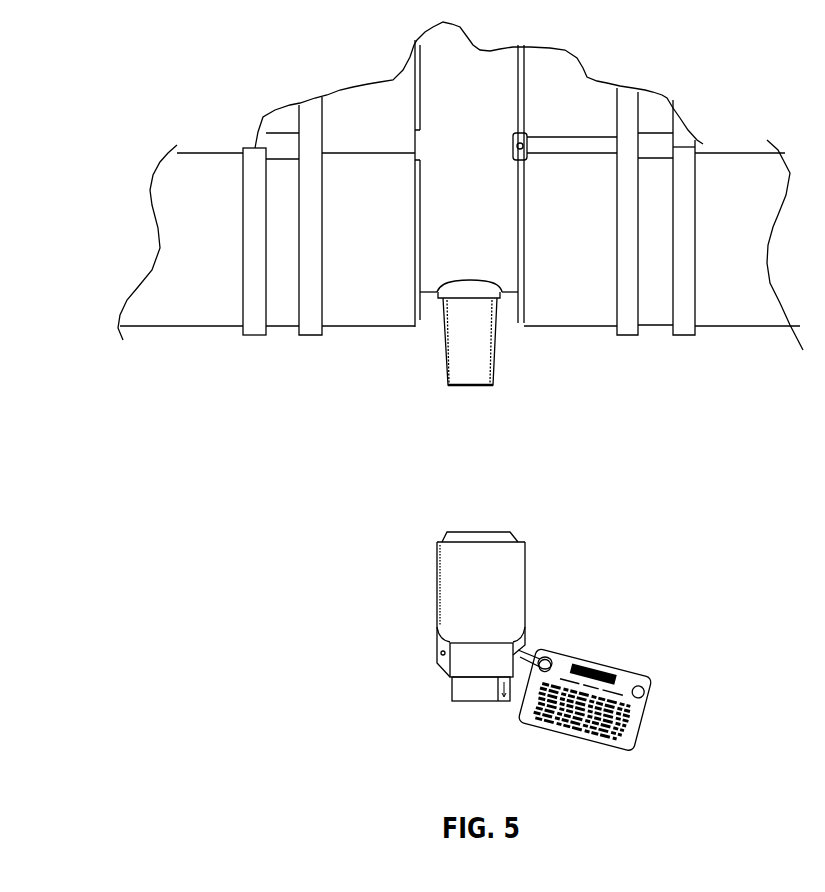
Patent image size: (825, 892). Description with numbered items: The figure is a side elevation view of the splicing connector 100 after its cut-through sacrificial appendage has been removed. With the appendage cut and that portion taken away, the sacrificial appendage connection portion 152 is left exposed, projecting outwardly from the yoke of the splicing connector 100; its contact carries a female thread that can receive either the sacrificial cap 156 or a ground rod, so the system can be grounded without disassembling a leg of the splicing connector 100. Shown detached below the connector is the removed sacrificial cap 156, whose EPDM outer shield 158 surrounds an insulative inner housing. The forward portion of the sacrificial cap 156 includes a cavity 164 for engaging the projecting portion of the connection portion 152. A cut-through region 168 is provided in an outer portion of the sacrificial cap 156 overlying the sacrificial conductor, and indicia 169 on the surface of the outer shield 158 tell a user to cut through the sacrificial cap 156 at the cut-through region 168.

The splicing connector 100 is at (427, 220).
The sacrificial appendage connection portion 152 is at (480, 318).
The sacrificial cap 156 is at (461, 611).
The outer shield 158 is at (492, 575).
The cavity 164 is at (461, 634).
The cut-through region 168 is at (385, 746).
The indicia 169 is at (450, 687).